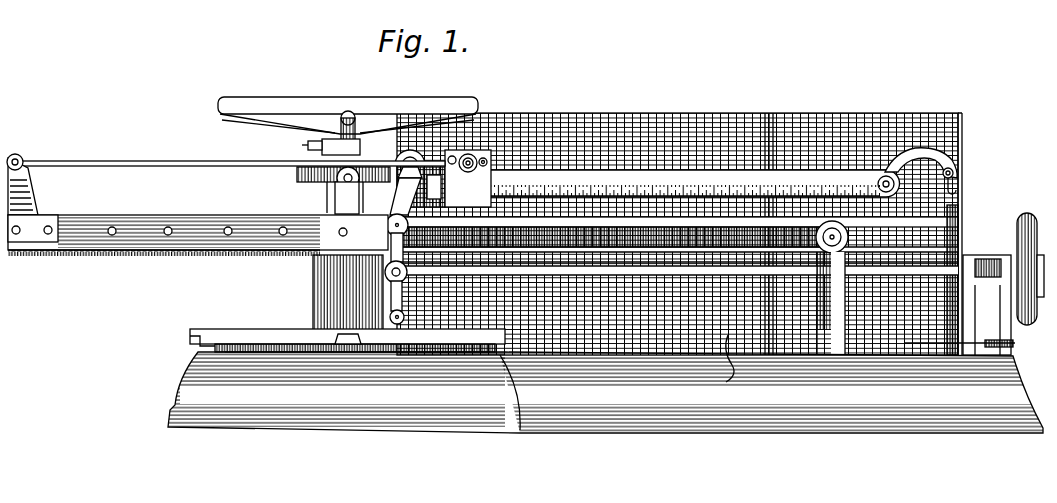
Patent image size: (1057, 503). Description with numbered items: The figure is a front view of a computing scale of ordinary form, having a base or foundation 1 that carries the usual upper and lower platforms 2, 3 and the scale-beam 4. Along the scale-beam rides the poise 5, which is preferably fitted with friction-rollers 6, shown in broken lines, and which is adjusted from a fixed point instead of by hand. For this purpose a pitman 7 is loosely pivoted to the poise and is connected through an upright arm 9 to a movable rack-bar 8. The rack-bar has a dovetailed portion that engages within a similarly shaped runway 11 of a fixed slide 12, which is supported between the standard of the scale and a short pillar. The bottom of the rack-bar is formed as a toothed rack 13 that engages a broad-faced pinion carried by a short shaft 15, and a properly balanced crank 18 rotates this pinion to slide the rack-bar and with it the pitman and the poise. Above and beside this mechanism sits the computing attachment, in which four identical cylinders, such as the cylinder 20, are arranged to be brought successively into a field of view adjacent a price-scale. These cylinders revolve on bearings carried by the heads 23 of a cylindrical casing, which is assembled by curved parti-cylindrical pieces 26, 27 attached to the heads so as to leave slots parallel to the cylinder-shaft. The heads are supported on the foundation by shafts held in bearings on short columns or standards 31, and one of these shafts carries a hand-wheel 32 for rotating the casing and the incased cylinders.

The base or foundation 1 is at (605, 392).
The upper platform 2 is at (336, 94).
The lower platform 3 is at (275, 330).
The scale-beam 4 is at (672, 183).
The poise 5 is at (468, 178).
The friction-rollers 6 is at (492, 150).
The pitman 7 is at (233, 166).
The rack-bar 8 is at (227, 232).
The upright arm 9 is at (33, 188).
The runway 11 is at (790, 240).
The fixed slide 12 is at (738, 250).
The toothed rack 13 is at (194, 252).
The short shaft 15 is at (388, 259).
The crank 18 is at (382, 346).
The cylinder 20 is at (631, 268).
The heads 23 is at (963, 150).
The parti-cylindrical piece 26 is at (664, 130).
The parti-cylindrical piece 27 is at (722, 369).
The short columns or standards 31 is at (960, 305).
The hand-wheel 32 is at (1030, 259).